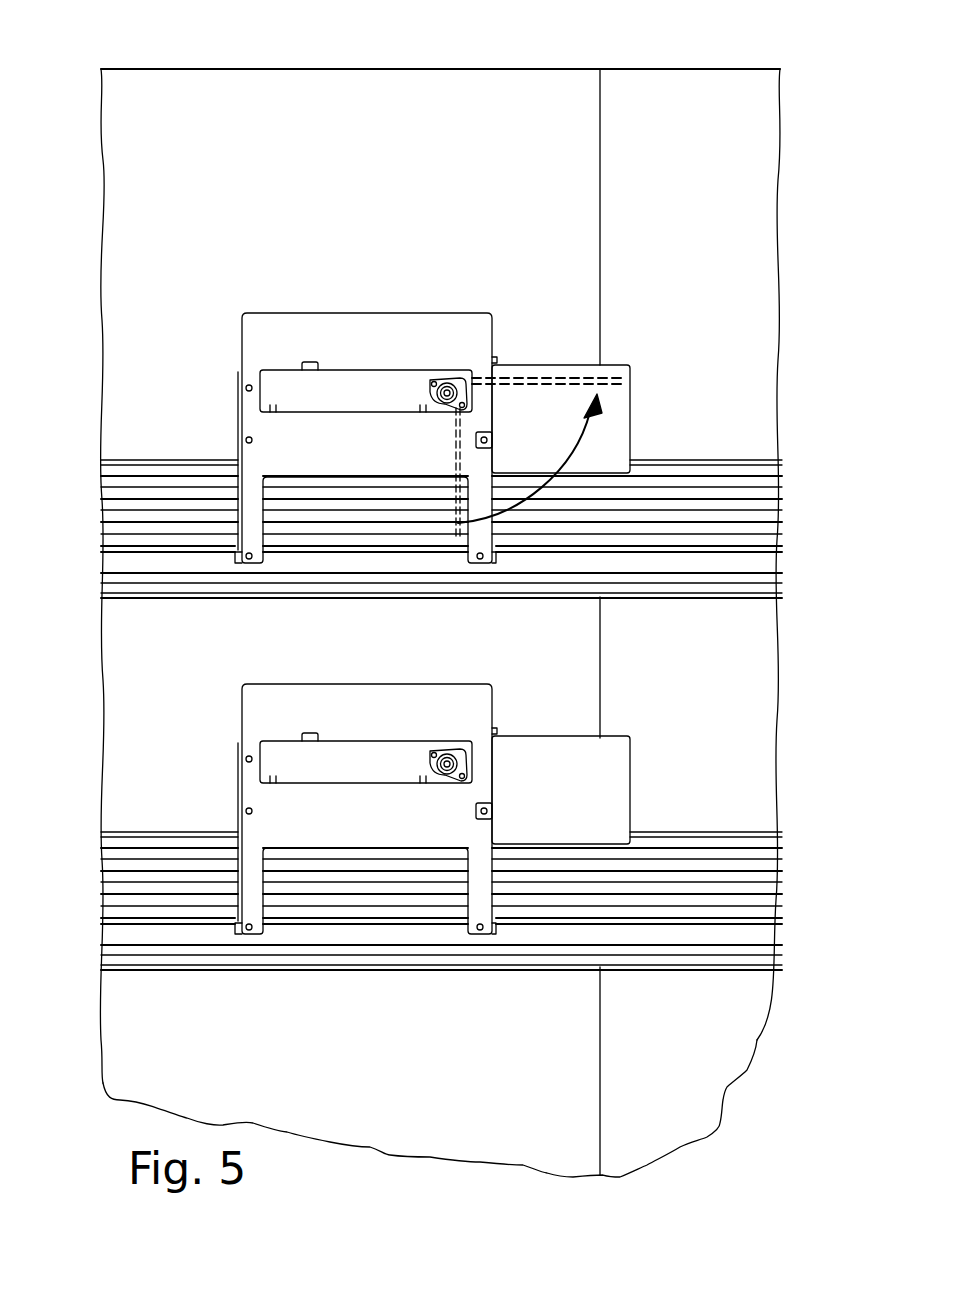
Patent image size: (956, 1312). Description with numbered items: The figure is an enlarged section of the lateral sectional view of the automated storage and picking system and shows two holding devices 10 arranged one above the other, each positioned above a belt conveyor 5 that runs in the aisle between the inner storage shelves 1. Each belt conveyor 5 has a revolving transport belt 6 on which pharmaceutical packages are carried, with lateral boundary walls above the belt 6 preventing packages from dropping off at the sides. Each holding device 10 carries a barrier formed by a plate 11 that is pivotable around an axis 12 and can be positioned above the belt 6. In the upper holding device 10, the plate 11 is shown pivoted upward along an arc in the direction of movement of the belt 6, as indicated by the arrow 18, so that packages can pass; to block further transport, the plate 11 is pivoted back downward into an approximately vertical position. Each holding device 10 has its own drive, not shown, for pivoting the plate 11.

The storage shelf 1 is at (362, 97).
The belt conveyor 5 is at (117, 517).
The transport belt 6 is at (188, 548).
The holding device 10 is at (283, 312).
The barrier plate 11 is at (560, 387).
The pivot axis 12 is at (450, 378).
The arrow 18 is at (597, 431).